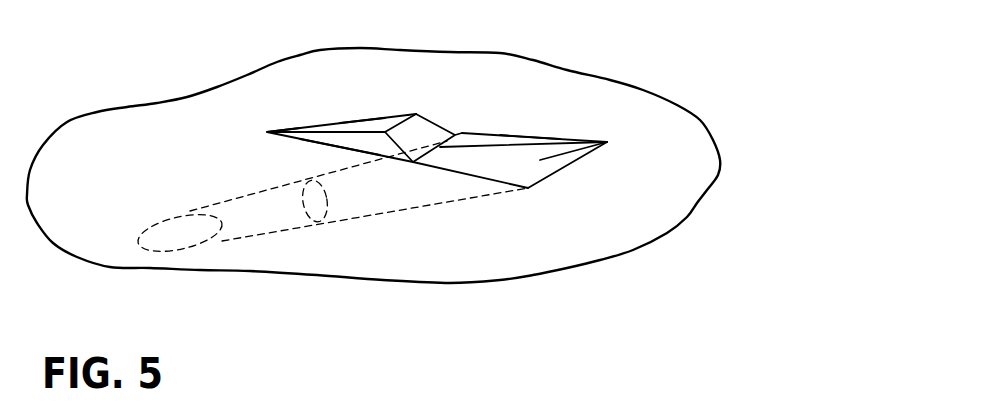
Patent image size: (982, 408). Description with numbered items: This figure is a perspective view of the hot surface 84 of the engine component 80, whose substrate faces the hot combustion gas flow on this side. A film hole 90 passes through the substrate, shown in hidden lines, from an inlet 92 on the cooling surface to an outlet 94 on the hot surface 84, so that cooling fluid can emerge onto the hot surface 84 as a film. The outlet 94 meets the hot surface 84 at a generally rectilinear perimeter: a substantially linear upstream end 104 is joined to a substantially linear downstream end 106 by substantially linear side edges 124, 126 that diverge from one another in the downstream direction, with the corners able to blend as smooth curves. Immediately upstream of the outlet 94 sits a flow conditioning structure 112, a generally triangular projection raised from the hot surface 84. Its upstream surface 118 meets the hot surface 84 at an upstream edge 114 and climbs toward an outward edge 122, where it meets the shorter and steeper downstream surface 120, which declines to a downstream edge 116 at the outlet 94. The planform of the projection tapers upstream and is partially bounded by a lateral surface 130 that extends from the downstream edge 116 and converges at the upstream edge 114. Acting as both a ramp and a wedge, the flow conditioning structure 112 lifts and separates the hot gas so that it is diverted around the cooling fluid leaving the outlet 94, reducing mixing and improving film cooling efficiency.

The engine component 80 is at (147, 137).
The hot surface 84 is at (188, 137).
The film hole 90 is at (267, 233).
The inlet 92 is at (173, 238).
The outlet 94 is at (515, 180).
The upstream end 104 is at (425, 132).
The downstream end 106 is at (570, 164).
The flow conditioning structure 112 is at (350, 118).
The upstream edge 114 is at (268, 132).
The downstream edge 116 is at (441, 150).
The upstream surface 118 is at (377, 126).
The downstream surface 120 is at (462, 133).
The outward edge 122 is at (394, 130).
The side edge 124 is at (537, 135).
The side edge 126 is at (477, 172).
The lateral surface 130 is at (326, 144).